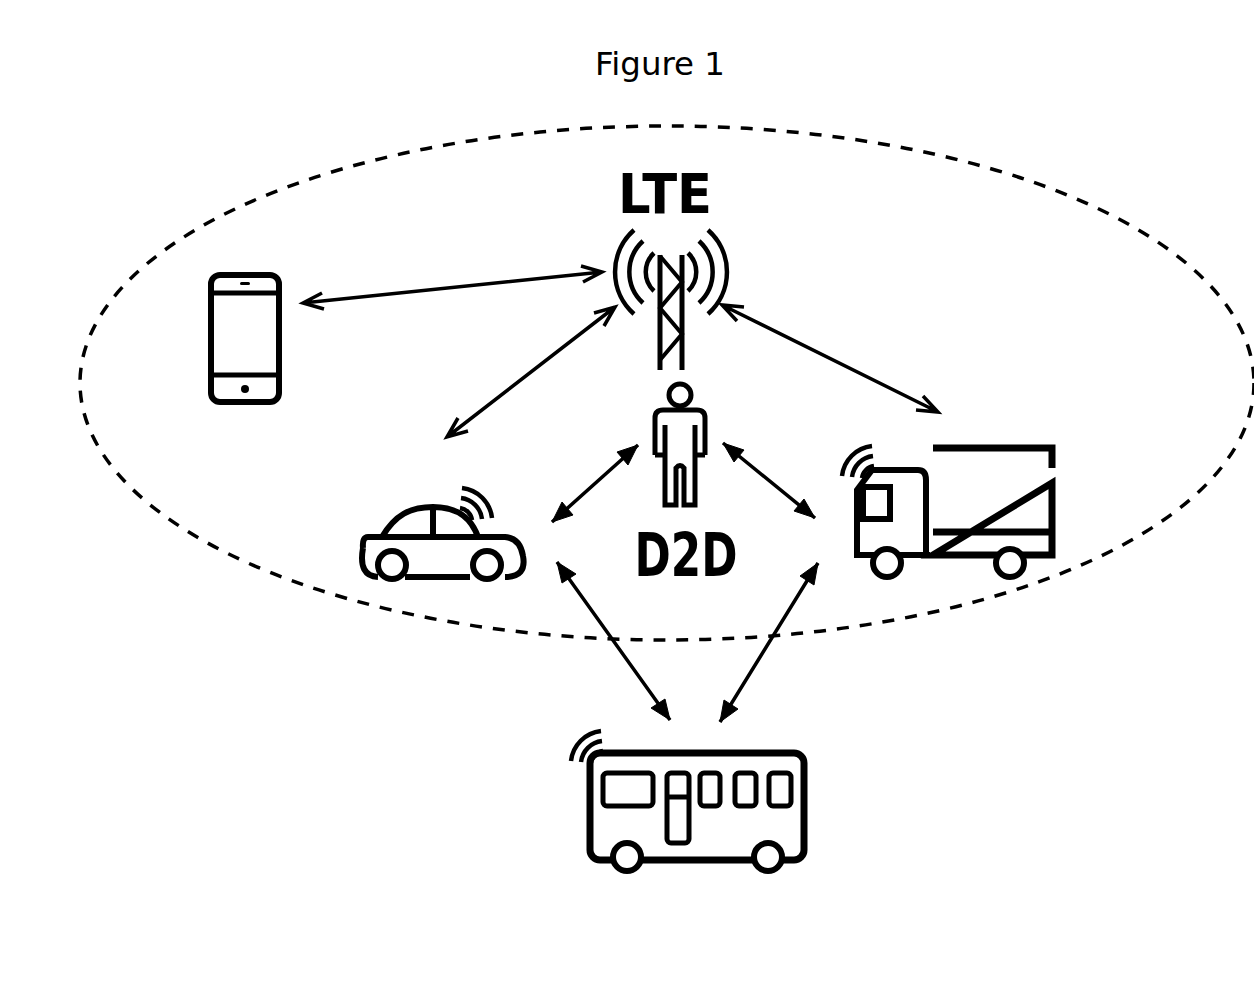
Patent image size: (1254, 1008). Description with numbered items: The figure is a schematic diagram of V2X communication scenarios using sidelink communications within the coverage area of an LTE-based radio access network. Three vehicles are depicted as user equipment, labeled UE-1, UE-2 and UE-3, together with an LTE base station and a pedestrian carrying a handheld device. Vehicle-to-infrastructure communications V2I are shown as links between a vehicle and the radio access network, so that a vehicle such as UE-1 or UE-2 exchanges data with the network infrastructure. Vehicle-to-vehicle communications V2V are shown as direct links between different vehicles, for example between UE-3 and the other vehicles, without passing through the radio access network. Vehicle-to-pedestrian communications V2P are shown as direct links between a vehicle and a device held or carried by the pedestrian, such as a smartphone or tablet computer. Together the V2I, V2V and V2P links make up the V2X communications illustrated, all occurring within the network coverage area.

The first user equipment (car) UE-1 is at (370, 567).
The second user equipment (truck) UE-2 is at (995, 565).
The third user equipment (bus) UE-3 is at (587, 766).
The vehicle-to-infrastructure communications V2I is at (773, 325).
The vehicle-to-pedestrian communications V2P is at (757, 470).
The vehicle-to-vehicle communications V2V is at (758, 663).